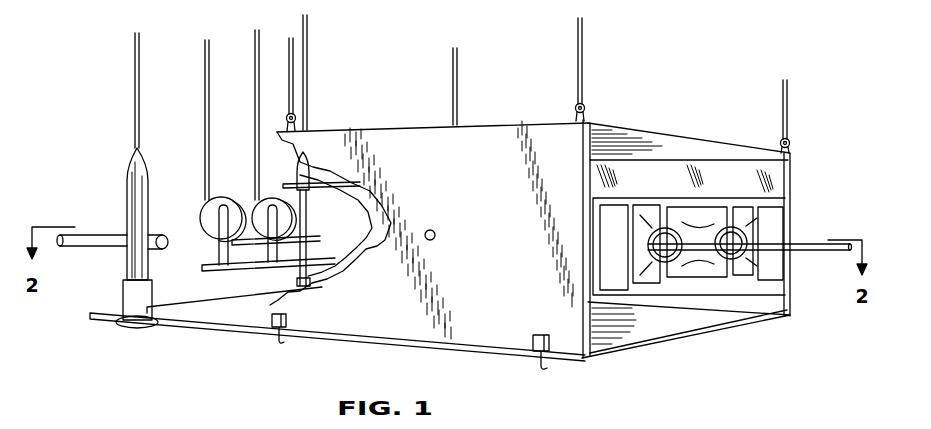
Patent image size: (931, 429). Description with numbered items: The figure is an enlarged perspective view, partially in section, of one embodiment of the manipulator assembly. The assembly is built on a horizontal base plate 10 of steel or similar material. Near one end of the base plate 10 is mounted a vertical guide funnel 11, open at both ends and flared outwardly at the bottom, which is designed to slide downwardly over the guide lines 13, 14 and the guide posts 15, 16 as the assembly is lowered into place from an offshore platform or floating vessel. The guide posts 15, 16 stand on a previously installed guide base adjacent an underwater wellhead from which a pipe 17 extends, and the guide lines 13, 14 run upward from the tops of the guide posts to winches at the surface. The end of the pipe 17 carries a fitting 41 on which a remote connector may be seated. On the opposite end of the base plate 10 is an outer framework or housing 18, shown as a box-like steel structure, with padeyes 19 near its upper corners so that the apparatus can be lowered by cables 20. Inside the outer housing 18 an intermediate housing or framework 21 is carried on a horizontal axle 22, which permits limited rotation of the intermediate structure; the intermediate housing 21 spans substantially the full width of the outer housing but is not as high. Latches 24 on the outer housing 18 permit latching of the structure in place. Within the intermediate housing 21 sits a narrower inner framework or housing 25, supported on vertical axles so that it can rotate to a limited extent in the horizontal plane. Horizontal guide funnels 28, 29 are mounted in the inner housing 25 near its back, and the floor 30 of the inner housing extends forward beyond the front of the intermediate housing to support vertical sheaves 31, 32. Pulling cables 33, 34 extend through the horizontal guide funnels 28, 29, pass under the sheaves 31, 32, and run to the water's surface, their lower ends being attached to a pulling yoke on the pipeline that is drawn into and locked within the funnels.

The base plate 10 is at (232, 331).
The guide funnel 11 is at (140, 328).
The guide line 13 is at (135, 60).
The guide line 14 is at (308, 44).
The guide post 15 is at (148, 180).
The guide post 16 is at (296, 168).
The pipe 17 is at (92, 247).
The outer framework or housing 18 is at (497, 124).
The padeyes 19 is at (287, 117).
The cables 20 is at (290, 50).
The intermediate housing or framework 21 is at (376, 231).
The horizontal axle 22 is at (434, 231).
The latches 24 is at (288, 322).
The inner framework or housing 25 is at (750, 220).
The horizontal guide funnel 28 is at (675, 262).
The horizontal guide funnel 29 is at (738, 262).
The floor 30 is at (243, 270).
The vertical sheave 31 is at (212, 236).
The vertical sheave 32 is at (265, 198).
The pulling cable 33 is at (205, 90).
The pulling cable 34 is at (255, 62).
The fitting 41 is at (160, 236).